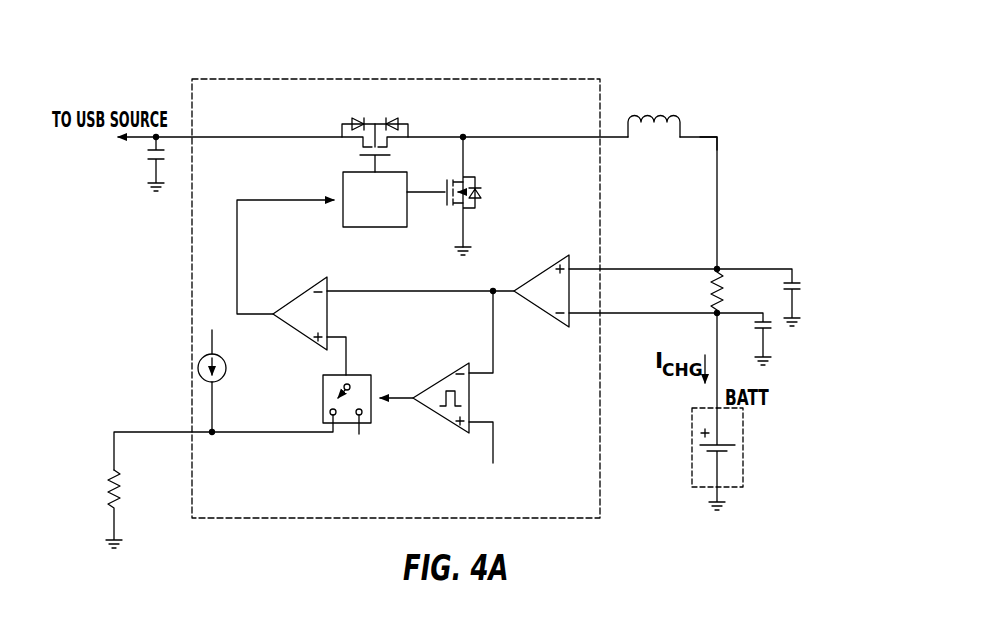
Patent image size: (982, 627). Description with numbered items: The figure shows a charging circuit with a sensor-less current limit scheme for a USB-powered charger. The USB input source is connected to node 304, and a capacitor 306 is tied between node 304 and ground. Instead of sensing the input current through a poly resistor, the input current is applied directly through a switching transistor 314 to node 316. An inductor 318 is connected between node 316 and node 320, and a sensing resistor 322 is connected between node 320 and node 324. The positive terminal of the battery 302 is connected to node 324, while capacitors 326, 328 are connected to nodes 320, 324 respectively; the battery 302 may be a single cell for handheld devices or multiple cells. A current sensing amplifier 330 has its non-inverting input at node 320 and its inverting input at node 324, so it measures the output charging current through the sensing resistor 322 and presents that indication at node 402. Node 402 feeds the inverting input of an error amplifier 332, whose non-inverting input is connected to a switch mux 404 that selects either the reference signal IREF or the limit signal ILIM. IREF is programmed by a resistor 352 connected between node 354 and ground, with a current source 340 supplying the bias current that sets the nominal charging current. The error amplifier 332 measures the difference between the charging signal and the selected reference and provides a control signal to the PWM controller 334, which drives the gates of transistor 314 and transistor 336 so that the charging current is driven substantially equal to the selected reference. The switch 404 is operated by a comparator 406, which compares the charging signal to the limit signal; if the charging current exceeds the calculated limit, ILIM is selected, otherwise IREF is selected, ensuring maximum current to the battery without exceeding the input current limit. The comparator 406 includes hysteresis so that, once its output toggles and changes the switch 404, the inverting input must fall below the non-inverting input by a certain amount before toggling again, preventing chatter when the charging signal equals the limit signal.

The battery 302 is at (745, 453).
The node 304 is at (140, 138).
The capacitor 306 is at (152, 159).
The switching transistor 314 is at (390, 147).
The node 316 is at (464, 135).
The inductor 318 is at (651, 112).
The node 320 is at (720, 137).
The sensing resistor RSEN 322 is at (710, 300).
The node 324 is at (712, 315).
The capacitor 326 is at (800, 290).
The capacitor 328 is at (773, 328).
The current sensing amplifier 330 is at (548, 316).
The error amplifier 332 is at (292, 322).
The PWM controller 334 is at (343, 180).
The transistor 336 is at (470, 179).
The current source 340 is at (197, 366).
The resistor RIREF 352 is at (107, 495).
The node 354 is at (207, 430).
The node 402 is at (494, 289).
The switch mux 404 is at (360, 375).
The comparator 406 is at (441, 415).